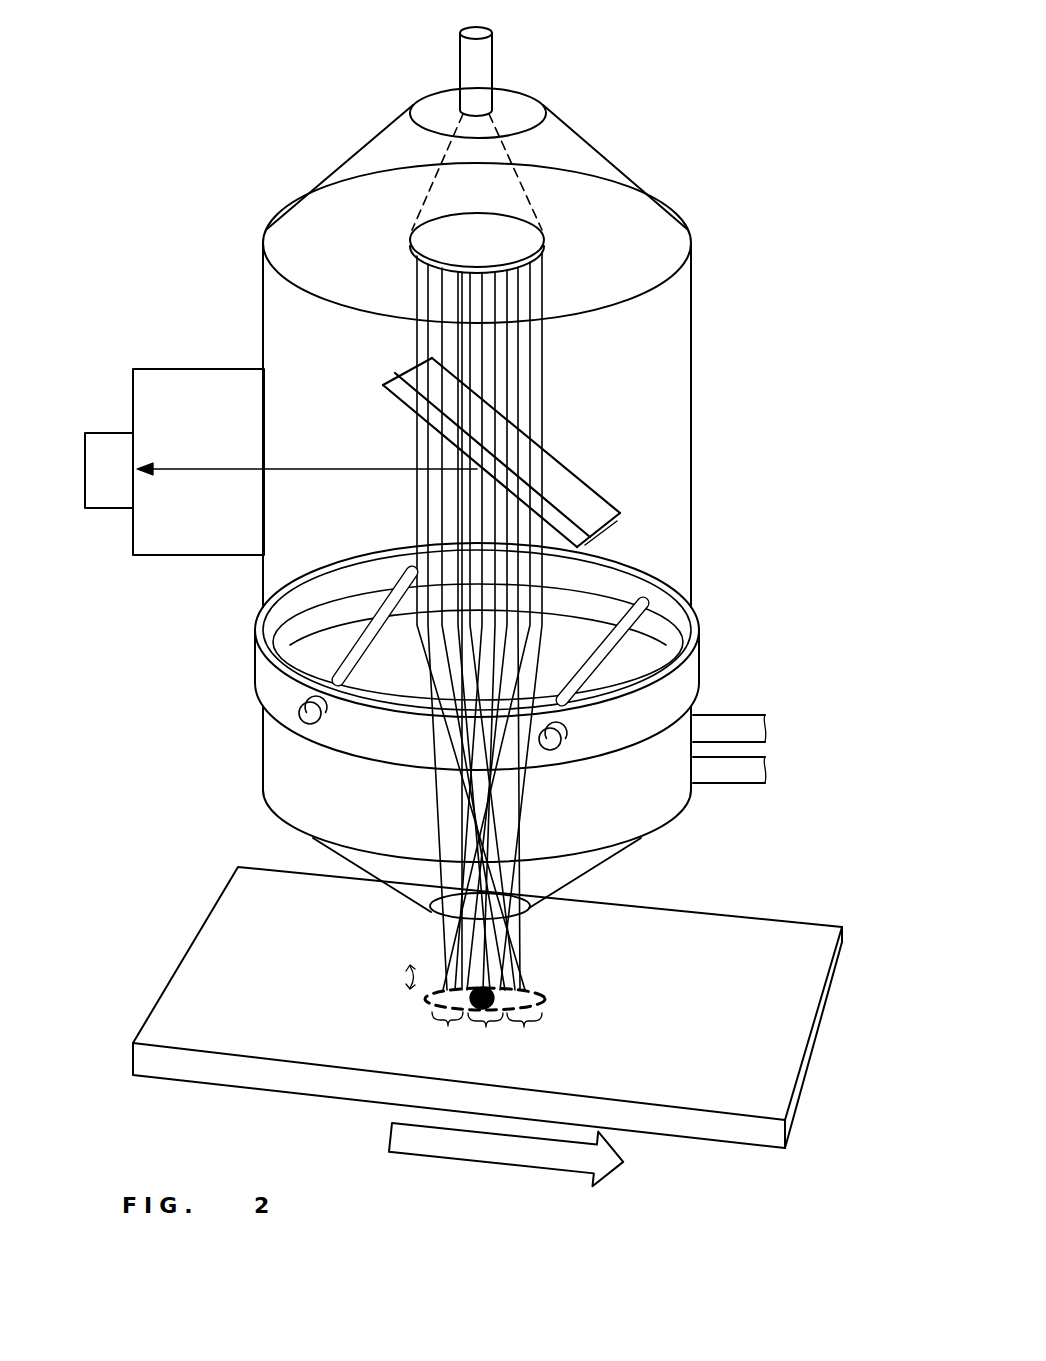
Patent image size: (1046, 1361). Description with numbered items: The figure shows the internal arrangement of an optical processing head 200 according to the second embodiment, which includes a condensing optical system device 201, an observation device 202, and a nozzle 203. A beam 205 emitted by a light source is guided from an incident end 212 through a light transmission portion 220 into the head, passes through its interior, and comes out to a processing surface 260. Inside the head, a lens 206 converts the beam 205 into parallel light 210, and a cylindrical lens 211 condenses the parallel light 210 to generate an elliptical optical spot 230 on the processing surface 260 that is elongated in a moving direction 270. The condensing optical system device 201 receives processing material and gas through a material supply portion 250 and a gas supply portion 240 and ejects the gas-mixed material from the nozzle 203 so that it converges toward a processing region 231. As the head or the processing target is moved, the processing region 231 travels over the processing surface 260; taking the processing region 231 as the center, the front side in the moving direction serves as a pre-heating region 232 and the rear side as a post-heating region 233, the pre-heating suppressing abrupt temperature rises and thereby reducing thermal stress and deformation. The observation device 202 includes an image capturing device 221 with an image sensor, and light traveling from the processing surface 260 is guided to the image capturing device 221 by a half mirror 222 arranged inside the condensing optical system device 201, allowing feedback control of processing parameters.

The optical processing head 200 is at (246, 188).
The condensing optical system device 201 is at (675, 352).
The observation device 202 is at (187, 368).
The nozzle 203 is at (582, 862).
The beam 205 is at (423, 212).
The lens 206 is at (415, 242).
The parallel light 210 is at (533, 405).
The cylindrical lens 211 is at (388, 652).
The incident end 212 is at (490, 109).
The light transmission portion 220 is at (464, 63).
The image capturing device 221 is at (97, 436).
The half mirror 222 is at (578, 500).
The optical spot 230 is at (545, 997).
The processing region 231 is at (481, 1037).
The pre-heating region 232 is at (528, 1037).
The post-heating region 233 is at (438, 1030).
The gas supply portion 240 is at (743, 770).
The material supply portion 250 is at (733, 728).
The processing surface 260 is at (236, 935).
The moving direction 270 is at (392, 1130).